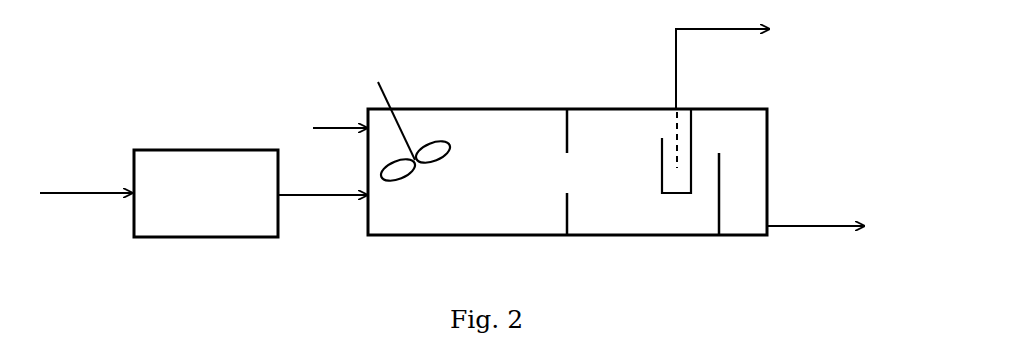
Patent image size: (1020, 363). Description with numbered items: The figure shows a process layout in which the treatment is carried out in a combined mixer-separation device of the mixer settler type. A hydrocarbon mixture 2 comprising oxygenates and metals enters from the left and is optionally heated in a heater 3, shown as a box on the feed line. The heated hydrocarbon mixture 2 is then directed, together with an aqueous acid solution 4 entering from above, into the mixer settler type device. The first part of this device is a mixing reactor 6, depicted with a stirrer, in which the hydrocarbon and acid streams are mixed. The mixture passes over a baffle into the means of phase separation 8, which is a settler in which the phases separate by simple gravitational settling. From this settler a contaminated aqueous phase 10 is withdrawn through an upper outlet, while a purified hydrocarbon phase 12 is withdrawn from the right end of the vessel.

The hydrocarbon mixture 2 is at (86, 177).
The heater 3 is at (250, 193).
The aqueous acid solution 4 is at (340, 109).
The mixing reactor 6 is at (544, 153).
The means of phase separation 8 is at (658, 153).
The contaminated aqueous phase 10 is at (745, 64).
The purified hydrocarbon phase 12 is at (836, 245).